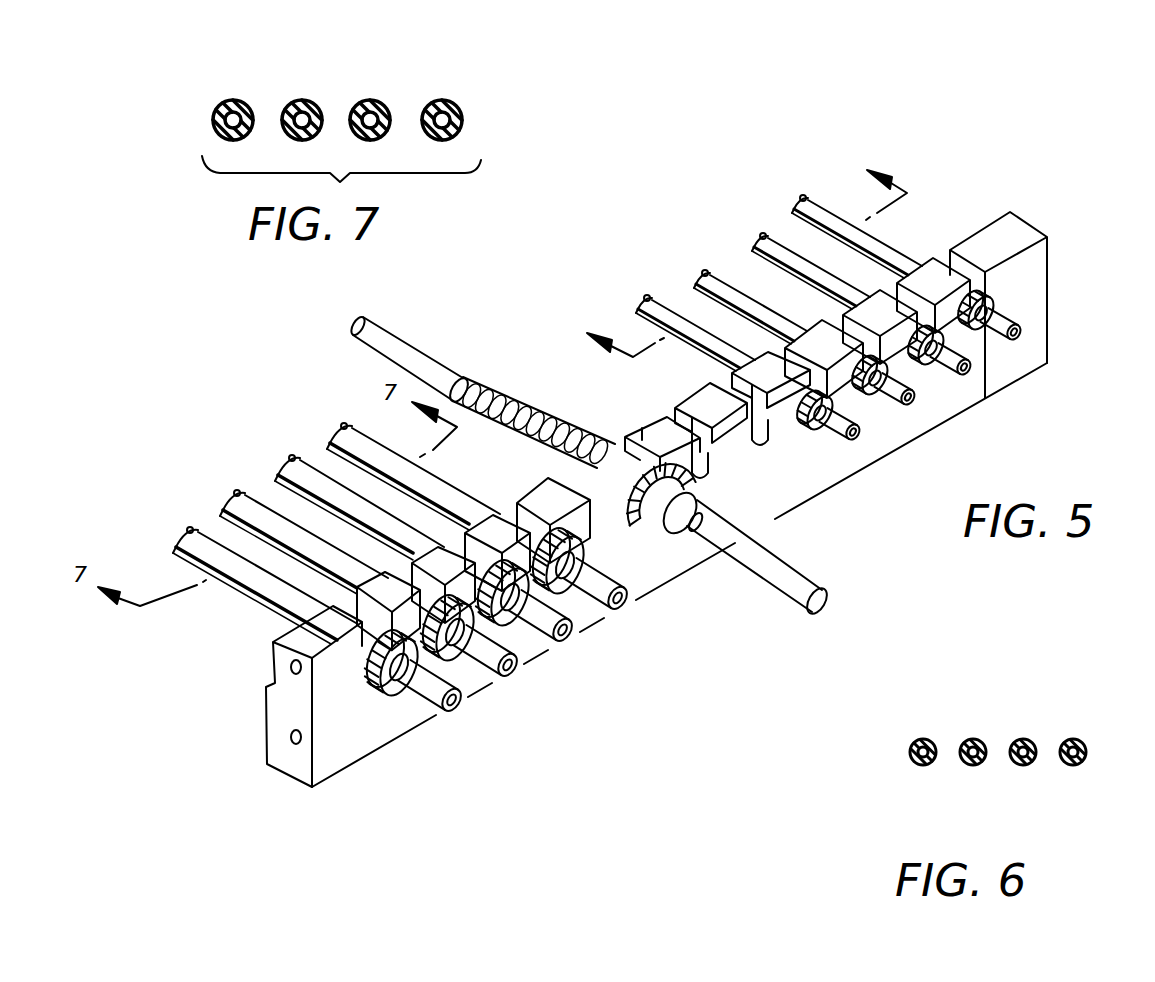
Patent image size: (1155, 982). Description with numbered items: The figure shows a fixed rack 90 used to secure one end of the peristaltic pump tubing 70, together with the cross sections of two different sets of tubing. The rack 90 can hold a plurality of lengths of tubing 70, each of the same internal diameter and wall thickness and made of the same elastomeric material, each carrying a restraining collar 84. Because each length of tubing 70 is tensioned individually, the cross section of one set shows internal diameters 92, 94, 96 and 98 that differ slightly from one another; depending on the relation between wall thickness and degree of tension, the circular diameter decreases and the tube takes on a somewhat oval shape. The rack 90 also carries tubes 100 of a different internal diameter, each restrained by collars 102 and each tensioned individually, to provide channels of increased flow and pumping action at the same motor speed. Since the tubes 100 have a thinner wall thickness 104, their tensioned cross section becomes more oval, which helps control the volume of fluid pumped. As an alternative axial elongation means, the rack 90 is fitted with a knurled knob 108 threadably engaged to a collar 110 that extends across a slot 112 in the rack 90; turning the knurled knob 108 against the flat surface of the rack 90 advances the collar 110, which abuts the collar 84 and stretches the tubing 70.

In FIG. 5, the peristaltic pump tubing 70 is at (423, 358).
In FIG. 6, the peristaltic pump tubing 70 is at (1063, 745).
In FIG. 5, the restraining collar 84 is at (755, 527).
In FIG. 5, the fixed rack 90 is at (1048, 323).
In FIG. 6, the internal diameter 92 is at (917, 765).
In FIG. 6, the internal diameter 94 is at (975, 767).
In FIG. 6, the internal diameter 96 is at (1019, 766).
In FIG. 6, the internal diameter 98 is at (1072, 766).
In FIG. 5, the tubes 100 is at (295, 458).
In FIG. 7, the tubes 100 is at (295, 102).
In FIG. 5, the collars 102 is at (372, 690).
In FIG. 7, the thinner wall thickness 104 is at (462, 107).
In FIG. 5, the knurled knob 108 is at (652, 540).
In FIG. 5, the collar 110 is at (508, 397).
In FIG. 5, the slot 112 is at (640, 433).